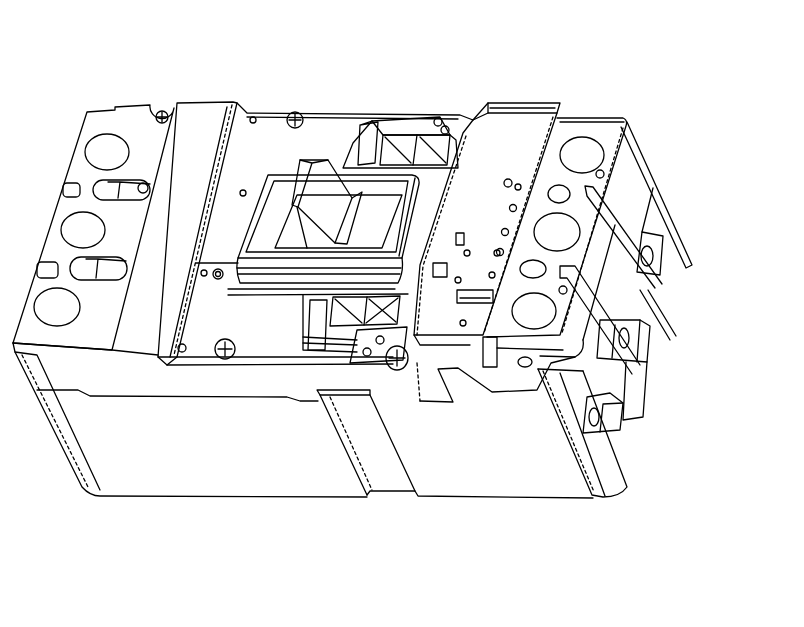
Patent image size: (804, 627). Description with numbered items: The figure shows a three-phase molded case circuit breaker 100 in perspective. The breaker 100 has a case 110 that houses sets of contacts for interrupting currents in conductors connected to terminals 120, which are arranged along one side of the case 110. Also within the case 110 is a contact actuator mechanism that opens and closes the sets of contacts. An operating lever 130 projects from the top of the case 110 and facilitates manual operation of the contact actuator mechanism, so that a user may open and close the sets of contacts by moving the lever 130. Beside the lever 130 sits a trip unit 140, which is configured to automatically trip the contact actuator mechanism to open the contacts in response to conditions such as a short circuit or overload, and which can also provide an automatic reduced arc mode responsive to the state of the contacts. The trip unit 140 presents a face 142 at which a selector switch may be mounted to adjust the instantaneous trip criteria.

The molded case circuit breaker 100 is at (644, 56).
The case 110 is at (622, 197).
The terminals 120 is at (661, 249).
The operating lever 130 is at (303, 160).
The trip unit 140 is at (484, 128).
The face of the trip unit 142 is at (535, 133).